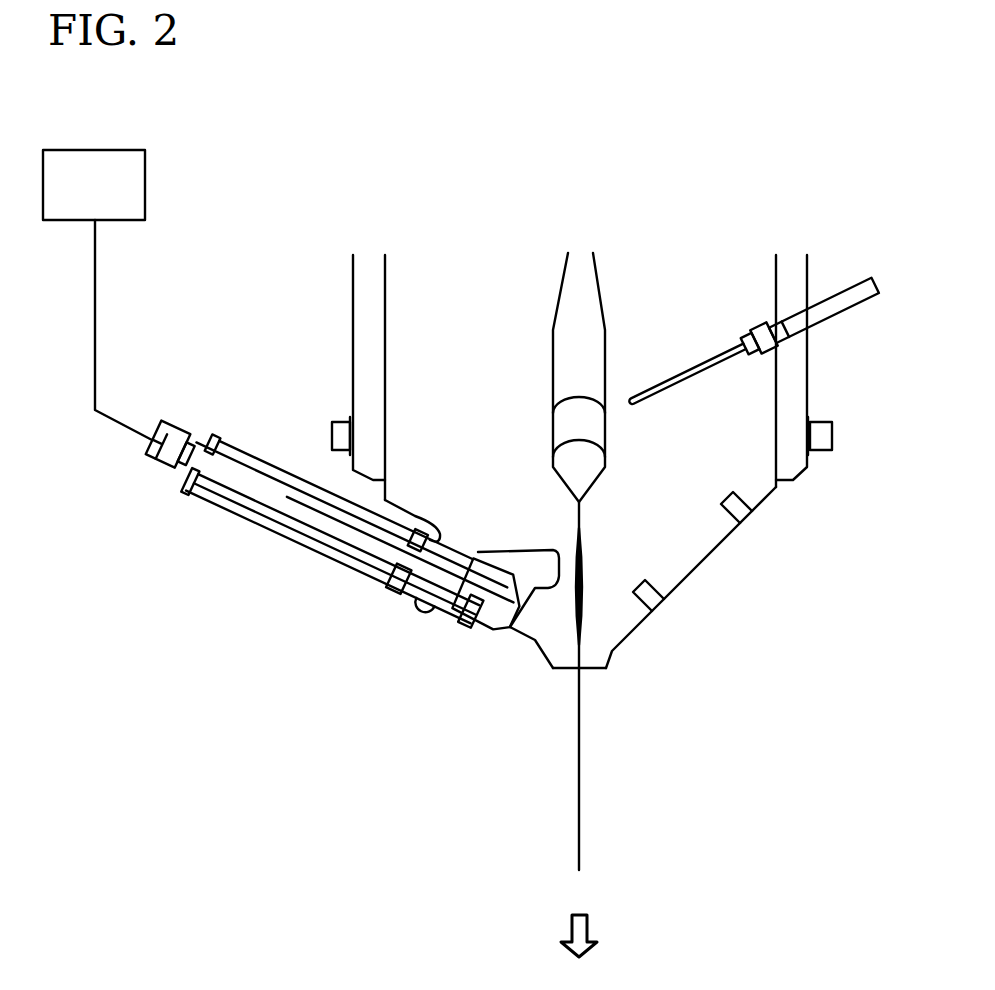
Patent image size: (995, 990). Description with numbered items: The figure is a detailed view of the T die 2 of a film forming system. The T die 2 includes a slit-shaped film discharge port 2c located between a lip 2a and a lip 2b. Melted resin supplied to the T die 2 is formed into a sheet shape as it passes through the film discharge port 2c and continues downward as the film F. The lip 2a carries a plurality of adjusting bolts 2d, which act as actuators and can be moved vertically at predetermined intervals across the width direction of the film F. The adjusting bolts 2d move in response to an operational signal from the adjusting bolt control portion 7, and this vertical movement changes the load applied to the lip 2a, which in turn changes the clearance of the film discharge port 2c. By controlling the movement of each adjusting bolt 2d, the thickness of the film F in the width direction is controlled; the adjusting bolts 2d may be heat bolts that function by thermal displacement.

The T die 2 is at (414, 212).
The lip 2a is at (547, 643).
The lip 2b is at (605, 645).
The film discharge port 2c is at (577, 665).
The adjusting bolt 2d is at (365, 538).
The adjusting bolt control portion 7 is at (145, 185).
The film F is at (580, 840).